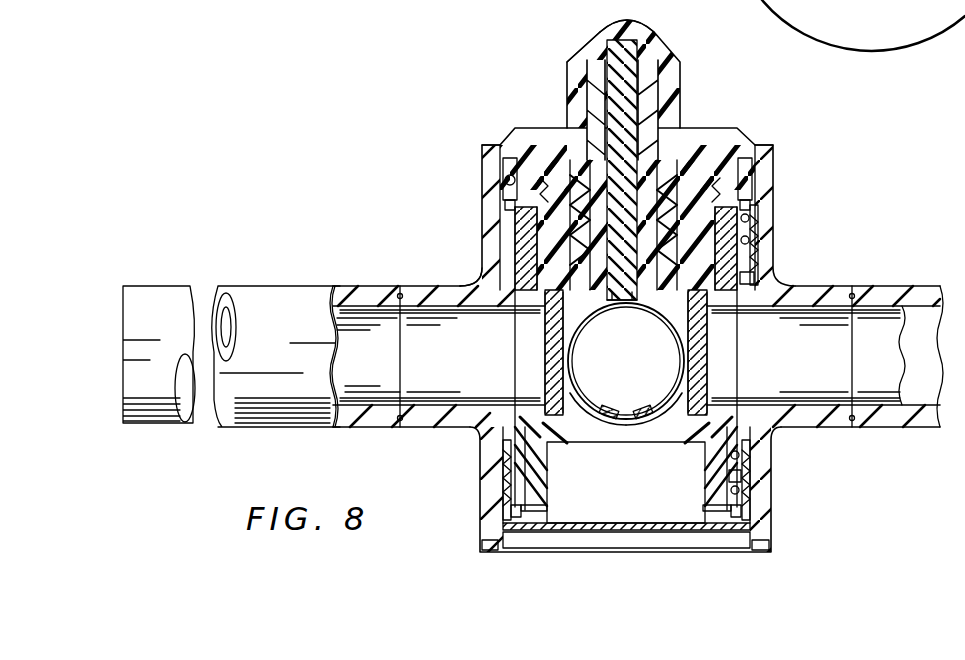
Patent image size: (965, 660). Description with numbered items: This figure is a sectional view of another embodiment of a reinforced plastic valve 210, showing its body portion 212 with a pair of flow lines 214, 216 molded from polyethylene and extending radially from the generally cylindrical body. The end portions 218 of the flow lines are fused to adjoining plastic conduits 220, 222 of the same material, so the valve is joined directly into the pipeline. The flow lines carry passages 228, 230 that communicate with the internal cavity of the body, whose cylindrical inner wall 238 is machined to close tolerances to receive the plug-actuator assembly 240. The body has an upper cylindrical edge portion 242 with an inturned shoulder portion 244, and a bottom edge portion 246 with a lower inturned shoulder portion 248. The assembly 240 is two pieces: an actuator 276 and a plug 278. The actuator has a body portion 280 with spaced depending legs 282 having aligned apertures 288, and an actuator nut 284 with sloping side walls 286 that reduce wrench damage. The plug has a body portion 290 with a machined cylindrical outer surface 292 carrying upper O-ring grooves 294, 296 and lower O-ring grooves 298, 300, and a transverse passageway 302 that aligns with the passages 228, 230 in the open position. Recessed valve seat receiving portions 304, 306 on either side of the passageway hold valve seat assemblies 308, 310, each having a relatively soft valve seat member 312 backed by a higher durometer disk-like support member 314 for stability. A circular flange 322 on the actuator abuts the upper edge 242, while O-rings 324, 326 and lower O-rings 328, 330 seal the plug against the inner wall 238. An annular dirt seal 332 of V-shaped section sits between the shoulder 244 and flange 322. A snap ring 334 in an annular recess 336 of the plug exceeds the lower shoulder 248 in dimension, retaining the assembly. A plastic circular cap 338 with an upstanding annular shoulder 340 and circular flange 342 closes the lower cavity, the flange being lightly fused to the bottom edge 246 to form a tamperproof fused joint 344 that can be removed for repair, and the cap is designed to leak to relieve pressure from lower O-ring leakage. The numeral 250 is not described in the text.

The reinforced plastic valve 210 is at (392, 152).
The body portion 212 is at (474, 228).
The flow line 214 is at (445, 285).
The flow line 216 is at (800, 287).
The end portions 218 is at (400, 291).
The plastic pipe or conduit 220 is at (282, 285).
The plastic pipe or conduit 222 is at (905, 286).
The passage 228 is at (448, 354).
The passage 230 is at (836, 347).
The cylindrical inner wall 238 is at (760, 200).
The plug-actuator assembly 240 is at (557, 117).
The upper cylindrical edge portion 242 is at (500, 166).
The inturned shoulder portion 244 is at (500, 192).
The bottom edge portion 246 is at (493, 538).
The inturned shoulder portion 248 is at (752, 510).
The body fillet 250 is at (482, 268).
The actuator 276 is at (677, 100).
The plug 278 is at (630, 302).
The body portion 280 is at (717, 130).
The depending legs 282 is at (638, 216).
The actuator nut 284 is at (640, 20).
The sloping side walls 286 is at (600, 37).
The aligned apertures 288 is at (721, 201).
The body portion 290 is at (530, 462).
The cylindrical outer surface 292 is at (487, 438).
The upper O-ring groove 294 is at (760, 215).
The upper O-ring groove 296 is at (753, 280).
The lower O-ring groove 298 is at (770, 432).
The lower O-ring groove 300 is at (764, 481).
The transverse passageway 302 is at (640, 356).
The recessed valve seat receiving portion 304 is at (556, 440).
The recessed valve seat receiving portion 306 is at (697, 440).
The valve seat assembly 308 is at (540, 346).
The valve seat assembly 310 is at (726, 363).
The valve seat member 312 is at (545, 380).
The disk-like support member 314 is at (545, 322).
The circular flange 322 is at (482, 148).
The O-ring 324 is at (757, 232).
The O-ring 326 is at (755, 248).
The lower O-ring 328 is at (760, 463).
The lower O-ring 330 is at (752, 492).
The annular dirt seal 332 is at (503, 182).
The snap ring 334 is at (757, 525).
The annular recess 336 is at (722, 506).
The circular cap 338 is at (656, 560).
The upstanding annular shoulder 340 is at (520, 540).
The circular flange 342 is at (488, 552).
The fused joint 344 is at (770, 550).